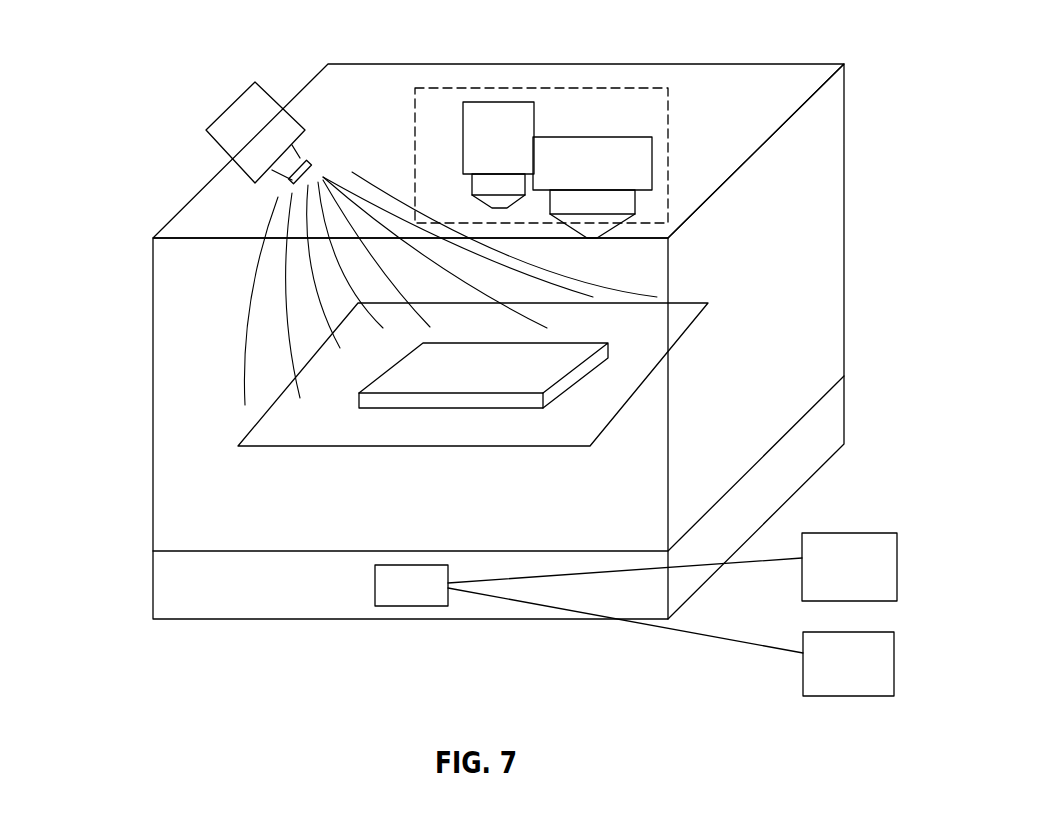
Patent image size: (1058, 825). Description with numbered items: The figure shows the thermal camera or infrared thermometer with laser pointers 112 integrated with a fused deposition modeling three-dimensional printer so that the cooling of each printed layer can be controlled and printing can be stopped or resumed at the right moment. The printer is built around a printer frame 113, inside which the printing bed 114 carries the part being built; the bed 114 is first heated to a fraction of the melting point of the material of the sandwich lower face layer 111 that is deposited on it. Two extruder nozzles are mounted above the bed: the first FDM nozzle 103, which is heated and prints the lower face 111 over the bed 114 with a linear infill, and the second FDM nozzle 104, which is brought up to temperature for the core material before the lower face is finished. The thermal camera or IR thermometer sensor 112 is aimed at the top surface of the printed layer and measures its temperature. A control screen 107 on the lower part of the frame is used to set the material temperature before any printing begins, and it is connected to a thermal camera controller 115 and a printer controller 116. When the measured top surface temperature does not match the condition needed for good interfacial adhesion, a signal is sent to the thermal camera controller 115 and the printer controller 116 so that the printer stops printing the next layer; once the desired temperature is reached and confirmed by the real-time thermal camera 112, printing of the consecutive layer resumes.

The FDM Nozzle 1 103 is at (652, 152).
The FDM Nozzle 2 104 is at (462, 138).
The control screen 107 is at (366, 588).
The sandwich lower face layer 111 is at (393, 365).
The thermal camera or IR thermometer with laser pointers 112 is at (228, 102).
The 3D printer frame 113 is at (820, 153).
The printing bed 114 is at (678, 315).
The thermal camera controller 115 is at (885, 578).
The 3D printer controller 116 is at (867, 672).